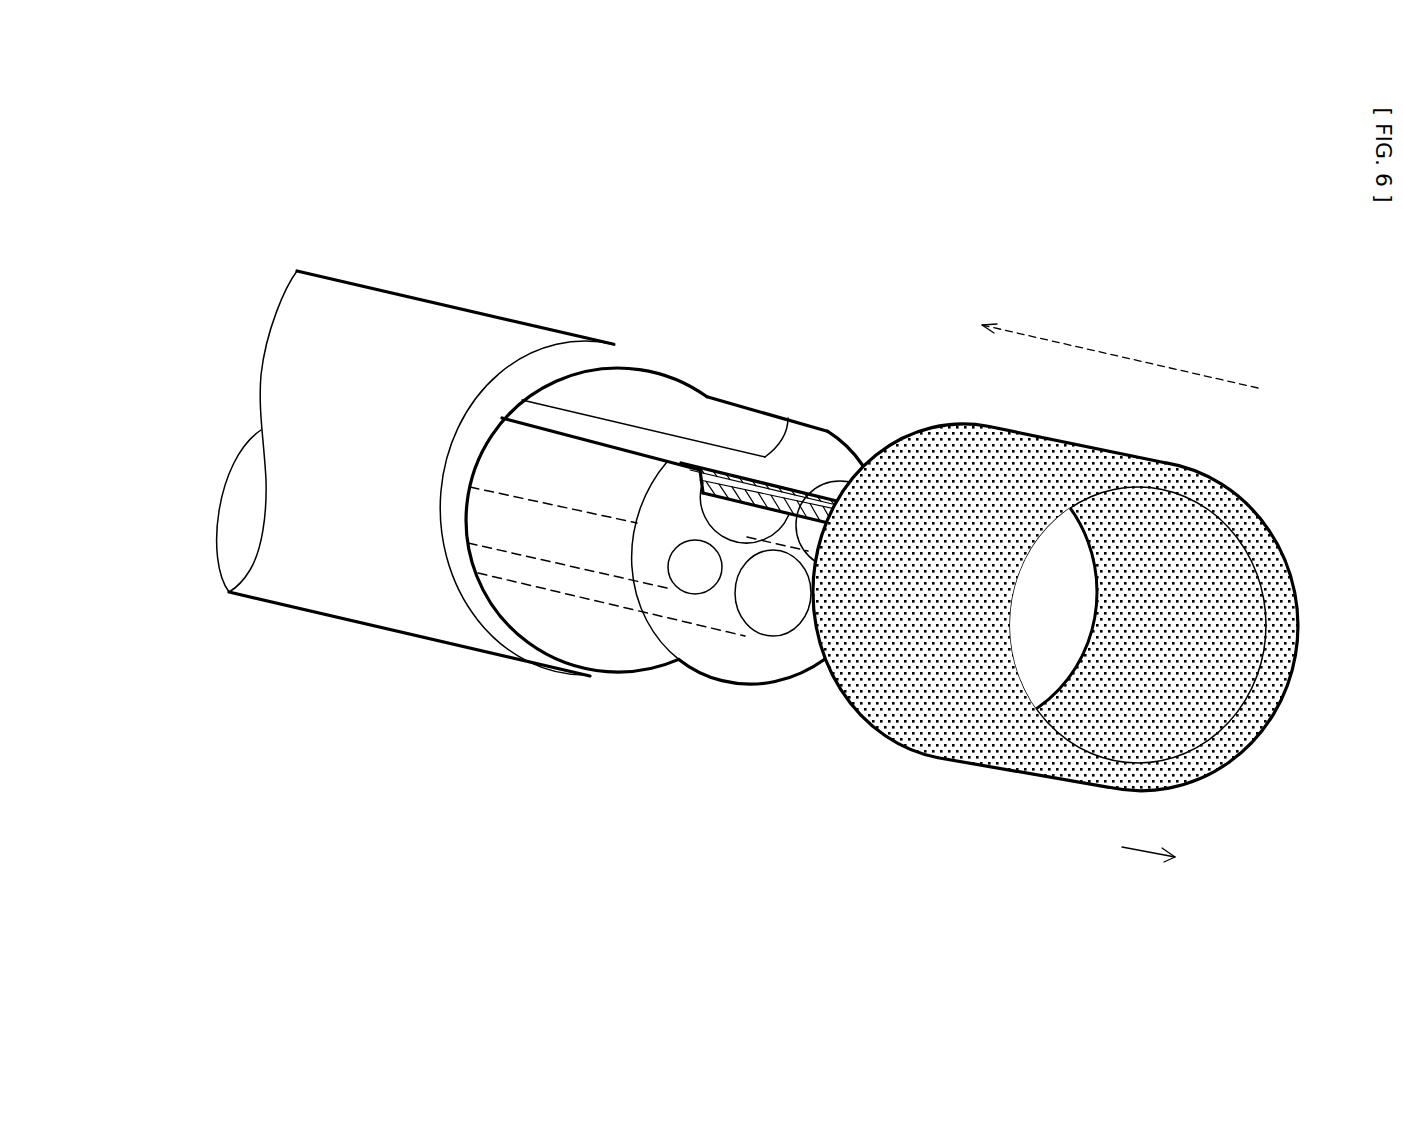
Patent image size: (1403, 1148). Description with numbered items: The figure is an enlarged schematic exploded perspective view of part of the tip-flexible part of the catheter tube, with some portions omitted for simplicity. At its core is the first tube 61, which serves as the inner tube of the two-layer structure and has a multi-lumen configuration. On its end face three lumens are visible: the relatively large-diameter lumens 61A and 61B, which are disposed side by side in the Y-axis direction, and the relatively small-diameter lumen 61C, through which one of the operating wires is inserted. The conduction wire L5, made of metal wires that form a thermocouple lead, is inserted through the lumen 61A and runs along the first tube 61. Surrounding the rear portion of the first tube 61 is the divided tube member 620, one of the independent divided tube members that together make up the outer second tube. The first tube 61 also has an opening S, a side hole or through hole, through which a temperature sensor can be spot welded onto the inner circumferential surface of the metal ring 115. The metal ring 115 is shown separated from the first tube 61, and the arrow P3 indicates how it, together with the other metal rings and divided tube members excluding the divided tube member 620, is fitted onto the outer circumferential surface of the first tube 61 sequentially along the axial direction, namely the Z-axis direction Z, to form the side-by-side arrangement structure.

The divided tube member 620 is at (402, 310).
The first tube 61 is at (760, 666).
The lumen 61A is at (771, 473).
The lumen 61B is at (768, 625).
The lumen 61C is at (696, 588).
The opening S is at (664, 434).
The conduction wire L5 is at (720, 464).
The metal ring 115 is at (952, 728).
The arrow P3 is at (1120, 358).
The Z-axis direction Z is at (1161, 861).